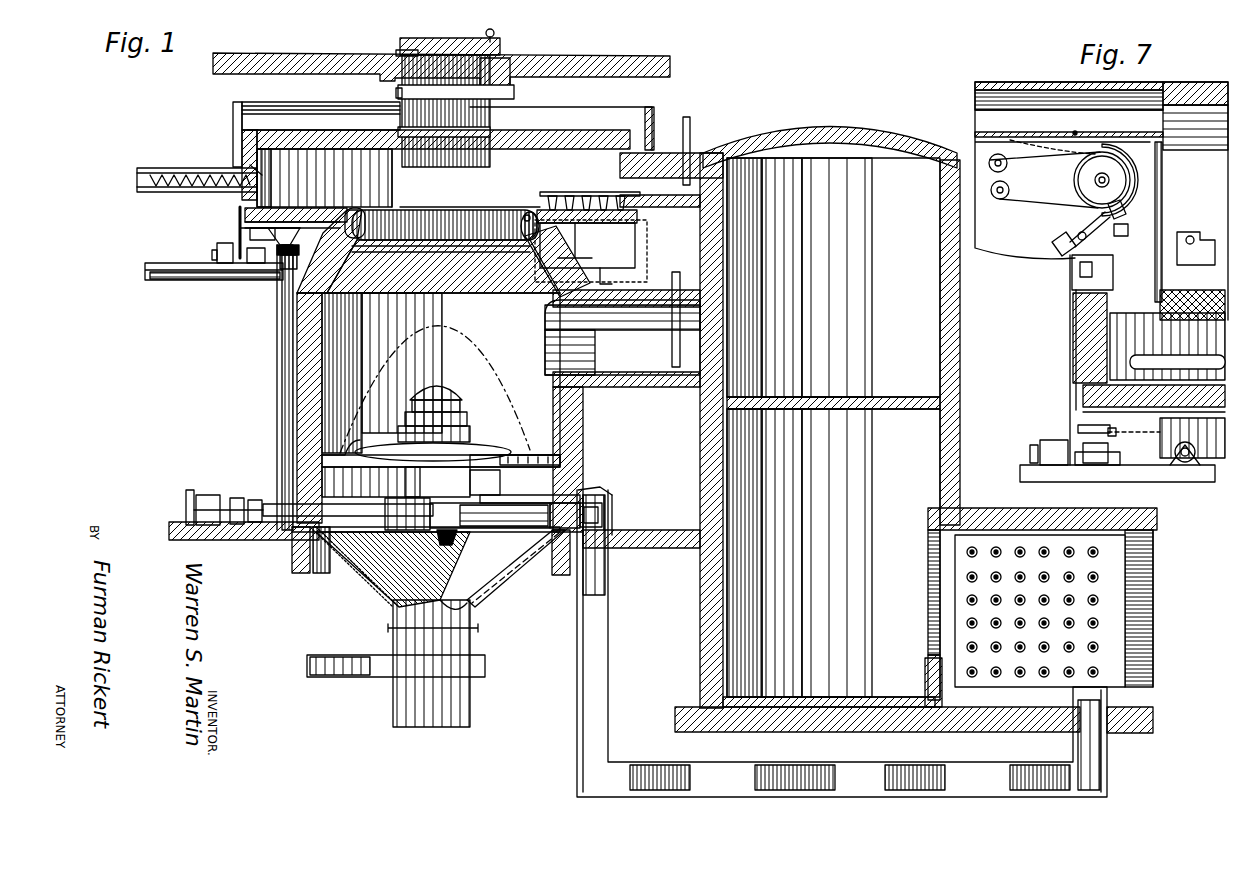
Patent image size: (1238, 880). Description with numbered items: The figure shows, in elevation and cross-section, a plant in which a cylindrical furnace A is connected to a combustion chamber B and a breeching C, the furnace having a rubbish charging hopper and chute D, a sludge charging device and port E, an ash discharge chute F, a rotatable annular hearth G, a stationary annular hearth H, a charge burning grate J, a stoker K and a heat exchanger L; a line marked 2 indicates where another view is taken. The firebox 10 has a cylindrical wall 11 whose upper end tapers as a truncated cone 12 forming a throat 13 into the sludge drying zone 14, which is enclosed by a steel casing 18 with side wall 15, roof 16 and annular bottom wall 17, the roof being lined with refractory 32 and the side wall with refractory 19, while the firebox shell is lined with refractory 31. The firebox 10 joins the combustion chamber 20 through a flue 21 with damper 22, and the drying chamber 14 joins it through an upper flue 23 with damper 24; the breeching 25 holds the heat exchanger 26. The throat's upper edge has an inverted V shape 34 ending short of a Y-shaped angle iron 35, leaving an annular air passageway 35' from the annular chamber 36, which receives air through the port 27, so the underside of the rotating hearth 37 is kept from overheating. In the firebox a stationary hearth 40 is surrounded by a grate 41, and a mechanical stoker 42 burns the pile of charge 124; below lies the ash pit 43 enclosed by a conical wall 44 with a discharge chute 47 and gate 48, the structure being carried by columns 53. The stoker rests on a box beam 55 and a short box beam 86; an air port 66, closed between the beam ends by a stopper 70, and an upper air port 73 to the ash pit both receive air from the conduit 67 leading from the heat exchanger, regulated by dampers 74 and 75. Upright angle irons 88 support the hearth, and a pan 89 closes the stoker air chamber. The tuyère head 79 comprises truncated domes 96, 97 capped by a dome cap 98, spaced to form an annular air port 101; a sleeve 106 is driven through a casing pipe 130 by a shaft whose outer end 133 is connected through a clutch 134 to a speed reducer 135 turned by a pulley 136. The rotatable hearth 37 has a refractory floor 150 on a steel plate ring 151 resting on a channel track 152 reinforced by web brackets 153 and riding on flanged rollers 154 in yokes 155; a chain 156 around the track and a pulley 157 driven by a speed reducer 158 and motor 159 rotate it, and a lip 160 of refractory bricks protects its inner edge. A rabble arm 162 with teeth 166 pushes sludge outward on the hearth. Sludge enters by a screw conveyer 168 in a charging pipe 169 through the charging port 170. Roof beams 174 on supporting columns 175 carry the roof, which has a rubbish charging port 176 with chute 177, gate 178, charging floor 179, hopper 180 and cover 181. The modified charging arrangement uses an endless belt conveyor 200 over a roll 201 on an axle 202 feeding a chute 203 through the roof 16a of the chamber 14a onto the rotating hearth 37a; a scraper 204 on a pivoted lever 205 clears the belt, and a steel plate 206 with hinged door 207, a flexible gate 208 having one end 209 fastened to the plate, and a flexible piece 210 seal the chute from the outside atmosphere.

In FIG. 1, the firebox 10 is at (428, 366).
In FIG. 1, the cylindrical surrounding wall 11 is at (572, 420).
In FIG. 1, the truncated cone 12 is at (552, 262).
In FIG. 1, the outlet or throat 13 is at (444, 231).
In FIG. 1, the sludge drying zone 14 is at (476, 180).
In FIG. 1, the side wall 15 is at (242, 142).
In FIG. 1, the roof 16 is at (280, 128).
In FIG. 1, the annular bottom wall 17 is at (580, 196).
In FIG. 1, the cylindrical steel casing 18 is at (648, 228).
In FIG. 1, the refractory 19 is at (247, 130).
In FIG. 1, the combustion chamber 20 is at (852, 396).
In FIG. 1, the flue 21 is at (622, 332).
In FIG. 1, the adjustable damper 22 is at (676, 355).
In FIG. 1, the upper flue 23 is at (668, 186).
In FIG. 1, the adjustable damper 24 is at (690, 135).
In FIG. 1, the breeching 25 is at (1150, 548).
In FIG. 1, the heat exchanger 26 is at (1105, 650).
In FIG. 1, the port 27 is at (240, 240).
In FIG. 1, the refractory 31 is at (297, 352).
In FIG. 1, the refractory material 32 is at (385, 150).
In FIG. 1, the inverted V shape 34 is at (528, 240).
In FIG. 1, the Y-shaped angle iron 35 is at (504, 197).
In FIG. 1, the annular air passageway 35' is at (517, 263).
In FIG. 1, the annular chamber 36 is at (587, 245).
In FIG. 1, the rotatable annular hearth 37 is at (592, 208).
In FIG. 1, the stationary annular hearth 40 is at (365, 455).
In FIG. 1, the annular grate 41 is at (560, 460).
In FIG. 1, the mechanical stoker 42 is at (485, 437).
In FIG. 1, the ash chamber or pit 43 is at (428, 568).
In FIG. 1, the wall 44 is at (372, 588).
In FIG. 1, the discharge chute 47 is at (392, 636).
In FIG. 1, the slide closure gate 48 is at (312, 655).
In FIG. 1, the columns 53 is at (276, 408).
In FIG. 1, the box beam 55 is at (500, 528).
In FIG. 1, the air port 66 is at (591, 515).
In FIG. 1, the air conduit 67 is at (605, 614).
In FIG. 1, the stopper 70 is at (548, 523).
In FIG. 1, the upper air port 73 is at (562, 496).
In FIG. 1, the damper 74 is at (616, 514).
In FIG. 1, the damper 75 is at (612, 492).
In FIG. 1, the tuyère head 79 is at (456, 394).
In FIG. 1, the short box beam 86 is at (398, 514).
In FIG. 1, the upright angle irons 88 is at (482, 478).
In FIG. 1, the pan 89 is at (455, 546).
In FIG. 1, the truncated dome 96 is at (418, 416).
In FIG. 1, the truncated dome 97 is at (422, 400).
In FIG. 1, the dome cap 98 is at (438, 384).
In FIG. 1, the annular air port 101 is at (433, 448).
In FIG. 1, the sleeve 106 is at (437, 482).
In FIG. 1, the pile of charge 124 is at (462, 330).
In FIG. 1, the casing pipe 130 is at (300, 532).
In FIG. 1, the outer end portion 133 is at (258, 508).
In FIG. 1, the clutch 134 is at (240, 498).
In FIG. 1, the speed reducer 135 is at (210, 495).
In FIG. 1, the pulley 136 is at (190, 490).
In FIG. 1, the floor 150 is at (245, 214).
In FIG. 1, the steel plate ring 151 is at (640, 240).
In FIG. 1, the circular channel iron track 152 is at (645, 252).
In FIG. 7, the circular channel iron track 152 is at (1150, 434).
In FIG. 1, the web brackets 153 is at (348, 216).
In FIG. 1, the flanged rollers 154 is at (285, 262).
In FIG. 1, the clevis or yoke 155 is at (288, 282).
In FIG. 7, the clevis or yoke 155 is at (1192, 466).
In FIG. 1, the chain 156 is at (250, 264).
In FIG. 7, the chain 156 is at (1115, 438).
In FIG. 1, the driven pulley 157 is at (264, 241).
In FIG. 7, the driven pulley 157 is at (1085, 428).
In FIG. 1, the speed reducer 158 is at (205, 276).
In FIG. 7, the speed reducer 158 is at (1098, 465).
In FIG. 1, the motor 159 is at (215, 250).
In FIG. 7, the motor 159 is at (1040, 445).
In FIG. 1, the lip 160 is at (522, 224).
In FIG. 1, the rabble arm 162 is at (545, 190).
In FIG. 1, the rabble teeth 166 is at (532, 212).
In FIG. 1, the screw conveyer 168 is at (142, 192).
In FIG. 1, the charging pipe 169 is at (140, 172).
In FIG. 1, the charging port 170 is at (255, 167).
In FIG. 1, the horizontal structural steel beams 174 is at (628, 107).
In FIG. 1, the supporting columns 175 is at (234, 108).
In FIG. 1, the rubbish charging port 176 is at (478, 120).
In FIG. 1, the chute 177 is at (505, 70).
In FIG. 1, the slidable closing gate 178 is at (514, 92).
In FIG. 1, the rubbish charging floor 179 is at (664, 58).
In FIG. 1, the hopper 180 is at (408, 52).
In FIG. 1, the cover 181 is at (455, 50).
In FIG. 7, the endless belt conveyor 200 is at (1020, 157).
In FIG. 7, the cylindrical roll 201 is at (1070, 190).
In FIG. 7, the axle 202 is at (1110, 180).
In FIG. 7, the chute 203 is at (1120, 278).
In FIG. 7, the scraper 204 is at (1126, 212).
In FIG. 7, the pivoted lever 205 is at (1086, 230).
In FIG. 7, the steel plate 206 is at (1005, 124).
In FIG. 7, the hinged door 207 is at (1145, 130).
In FIG. 7, the gate 208 is at (1062, 140).
In FIG. 7, the end 209 is at (1010, 142).
In FIG. 7, the flexible piece 210 is at (1130, 230).
In FIG. 7, the sludge charging chamber 14a is at (1127, 337).
In FIG. 7, the roof 16a is at (1192, 276).
In FIG. 7, the rotating hearth 37a is at (1083, 394).
In FIG. 1, the furnace A is at (276, 335).
In FIG. 1, the combustion chamber B is at (971, 326).
In FIG. 1, the breeching C is at (1003, 500).
In FIG. 1, the rubbish charging hopper and chute D is at (388, 95).
In FIG. 1, the sludge charging device and port E is at (181, 166).
In FIG. 1, the ash discharge chute F is at (484, 654).
In FIG. 1, the rotatable annular hearth G is at (240, 232).
In FIG. 1, the stationary annular hearth H is at (520, 455).
In FIG. 1, the charge burning grate J is at (544, 444).
In FIG. 1, the mechanically driven stoker K is at (395, 430).
In FIG. 1, the heat exchanger L is at (1124, 602).
In FIG. 1, the section line 2 is at (95, 180).